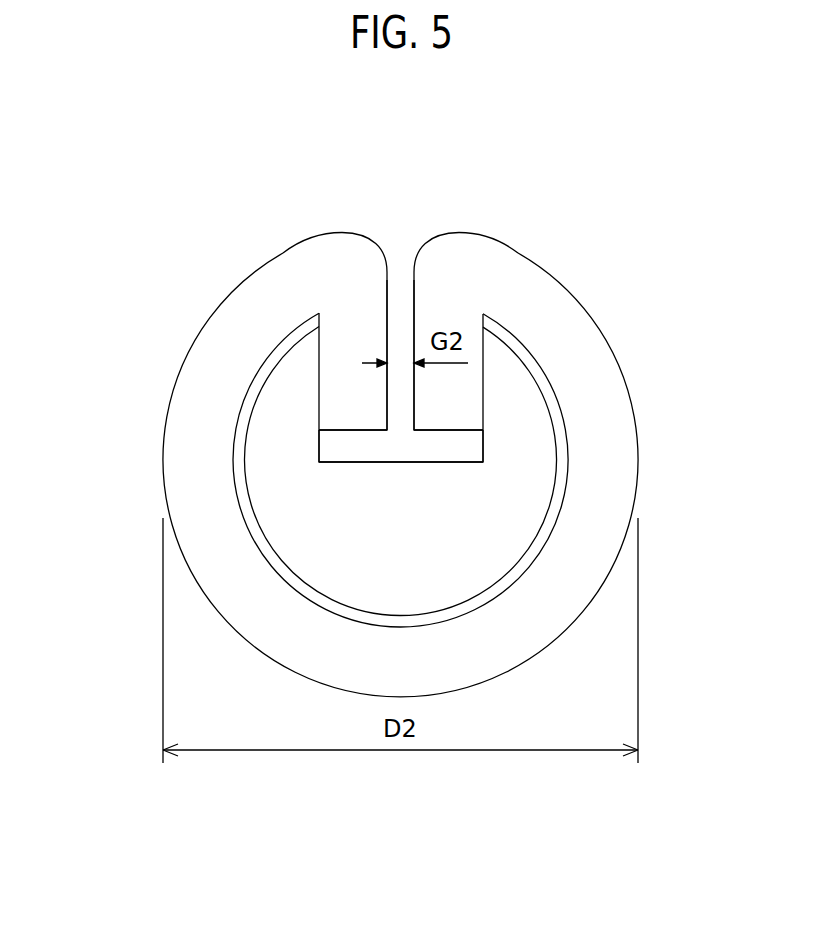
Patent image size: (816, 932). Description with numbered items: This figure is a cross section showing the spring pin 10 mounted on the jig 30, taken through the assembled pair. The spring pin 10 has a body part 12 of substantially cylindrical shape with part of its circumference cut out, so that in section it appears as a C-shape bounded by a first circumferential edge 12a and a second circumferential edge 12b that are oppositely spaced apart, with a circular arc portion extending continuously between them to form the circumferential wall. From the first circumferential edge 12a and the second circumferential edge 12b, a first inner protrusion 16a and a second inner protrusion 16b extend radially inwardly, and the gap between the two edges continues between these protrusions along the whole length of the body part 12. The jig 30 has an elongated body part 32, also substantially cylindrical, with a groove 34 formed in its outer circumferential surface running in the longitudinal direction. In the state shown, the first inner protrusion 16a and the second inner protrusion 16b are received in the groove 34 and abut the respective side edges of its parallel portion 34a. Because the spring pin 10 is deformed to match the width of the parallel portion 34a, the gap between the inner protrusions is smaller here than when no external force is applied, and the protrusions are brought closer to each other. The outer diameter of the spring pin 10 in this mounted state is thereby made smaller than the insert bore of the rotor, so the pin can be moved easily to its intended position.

The spring pin 10 is at (384, 420).
The body part 12 is at (380, 420).
The first circumferential edge 12a is at (349, 258).
The second circumferential edge 12b is at (448, 262).
The first inner protrusion 16a is at (337, 392).
The second inner protrusion 16b is at (468, 385).
The jig 30 is at (477, 470).
The body part 32 is at (555, 417).
The groove 34 is at (402, 514).
The parallel portion 34a is at (407, 470).